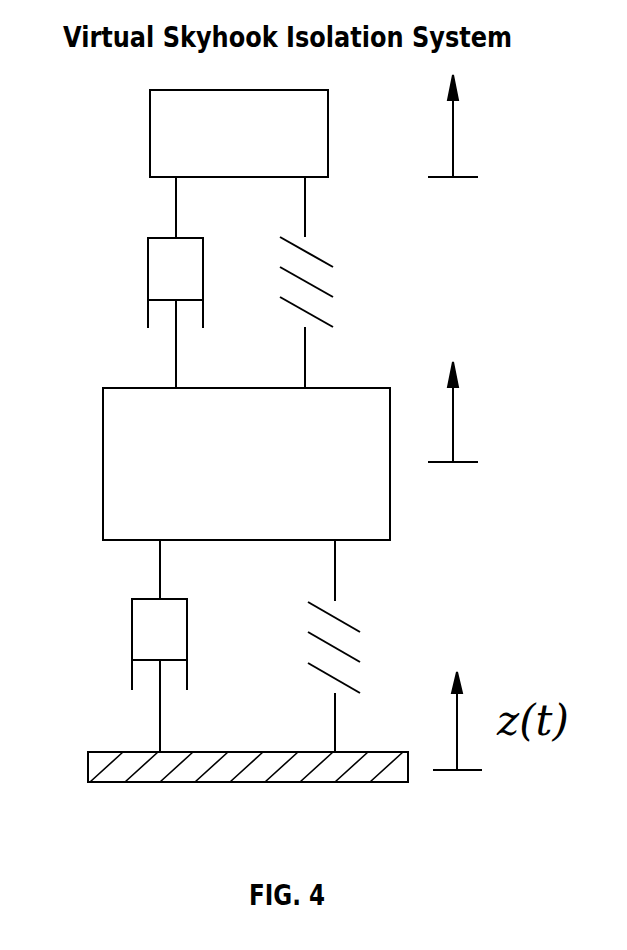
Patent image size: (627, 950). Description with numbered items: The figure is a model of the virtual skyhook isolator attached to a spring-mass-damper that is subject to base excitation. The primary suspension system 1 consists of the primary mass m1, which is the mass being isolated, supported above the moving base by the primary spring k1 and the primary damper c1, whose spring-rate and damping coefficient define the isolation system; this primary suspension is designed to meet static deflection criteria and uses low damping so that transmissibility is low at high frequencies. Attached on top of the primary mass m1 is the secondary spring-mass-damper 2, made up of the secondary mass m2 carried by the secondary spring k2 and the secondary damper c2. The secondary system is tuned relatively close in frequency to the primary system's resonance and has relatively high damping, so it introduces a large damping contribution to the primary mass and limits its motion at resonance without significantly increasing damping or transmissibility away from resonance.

The secondary mass m2 is at (239, 133).
The secondary damper c2 is at (127, 282).
The secondary spring k2 is at (346, 282).
The primary mass m1 is at (246, 464).
The damping coefficient of the isolation system c1 is at (114, 646).
The spring-rate of the isolation system k1 is at (375, 646).
The secondary spring-mass-damper 2 is at (326, 231).
The primary suspension system 1 is at (320, 557).